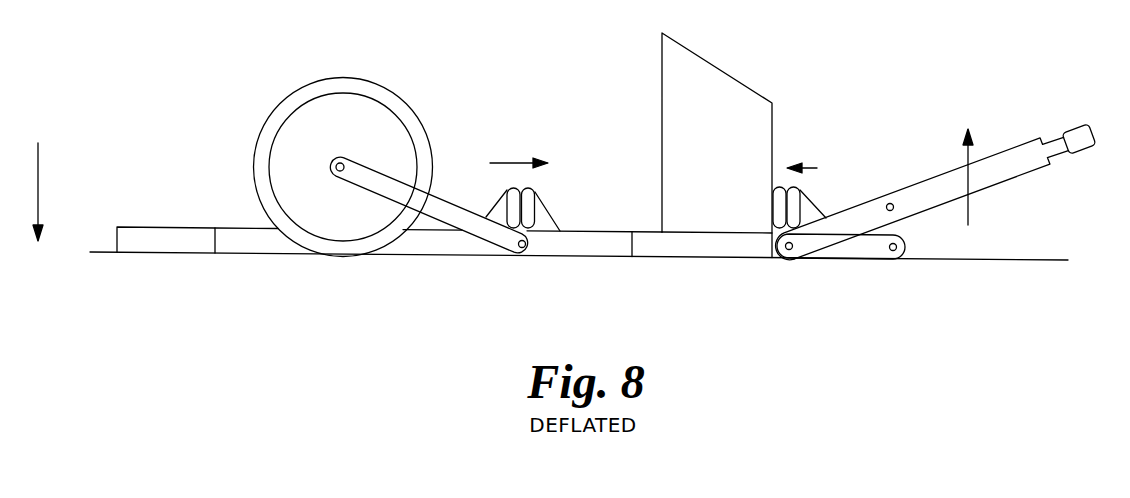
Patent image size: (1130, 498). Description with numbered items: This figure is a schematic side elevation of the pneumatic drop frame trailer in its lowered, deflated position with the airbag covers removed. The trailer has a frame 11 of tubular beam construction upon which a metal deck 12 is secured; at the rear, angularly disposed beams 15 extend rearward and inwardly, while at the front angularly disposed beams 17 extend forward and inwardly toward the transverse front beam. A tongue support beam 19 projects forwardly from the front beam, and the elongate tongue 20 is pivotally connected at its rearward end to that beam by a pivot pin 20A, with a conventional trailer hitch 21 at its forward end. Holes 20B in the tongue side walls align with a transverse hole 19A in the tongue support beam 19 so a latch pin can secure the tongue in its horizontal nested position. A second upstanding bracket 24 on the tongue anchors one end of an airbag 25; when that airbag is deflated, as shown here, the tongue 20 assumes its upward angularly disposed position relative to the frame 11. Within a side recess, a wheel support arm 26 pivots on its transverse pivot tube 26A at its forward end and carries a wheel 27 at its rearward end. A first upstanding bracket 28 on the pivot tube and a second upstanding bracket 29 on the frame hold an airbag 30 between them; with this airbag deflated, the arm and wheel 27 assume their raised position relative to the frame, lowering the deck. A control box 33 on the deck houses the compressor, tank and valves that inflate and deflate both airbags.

The frame 11 is at (248, 240).
The metal deck 12 is at (235, 227).
The angularly disposed beams 15 is at (147, 234).
The angularly disposed beams 17 is at (700, 248).
The tongue support beam 19 is at (907, 243).
The transverse hole 19A is at (893, 256).
The tongue 20 is at (1011, 148).
The pivot pin 20A is at (788, 258).
The holes 20B is at (892, 198).
The trailer hitch 21 is at (1075, 126).
The second upstanding bracket 24 is at (812, 213).
The airbag 25 is at (800, 200).
The wheel support arm 26 is at (436, 199).
The transverse pivot tube 26A is at (515, 262).
The wheel 27 is at (352, 77).
The first upstanding bracket 28 is at (499, 204).
The second upstanding bracket 29 is at (548, 206).
The airbag 30 is at (527, 197).
The control box 33 is at (712, 130).